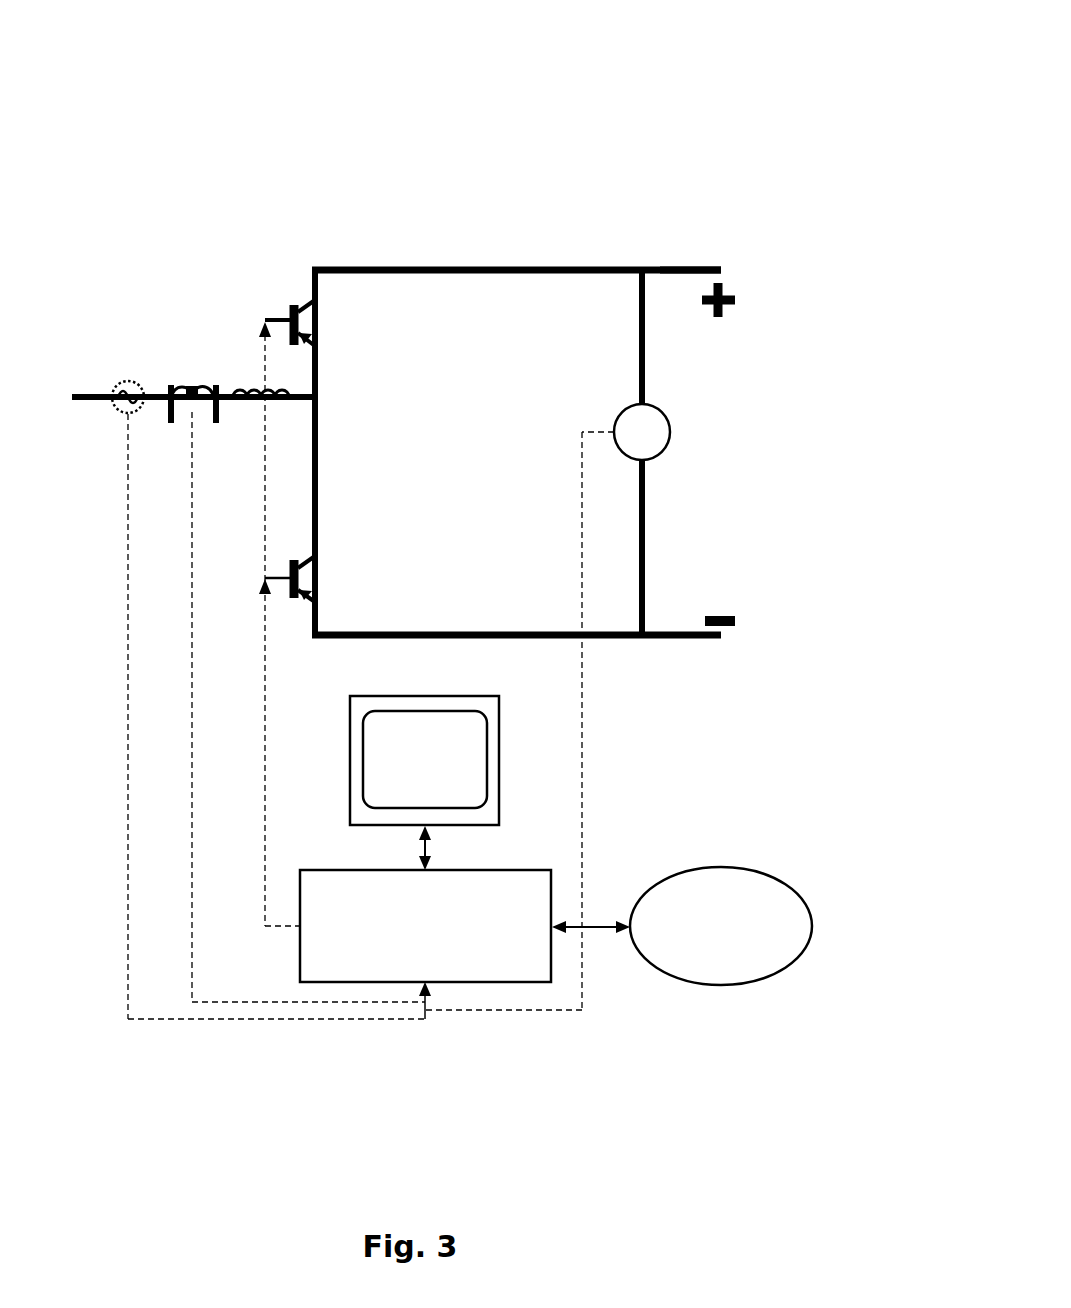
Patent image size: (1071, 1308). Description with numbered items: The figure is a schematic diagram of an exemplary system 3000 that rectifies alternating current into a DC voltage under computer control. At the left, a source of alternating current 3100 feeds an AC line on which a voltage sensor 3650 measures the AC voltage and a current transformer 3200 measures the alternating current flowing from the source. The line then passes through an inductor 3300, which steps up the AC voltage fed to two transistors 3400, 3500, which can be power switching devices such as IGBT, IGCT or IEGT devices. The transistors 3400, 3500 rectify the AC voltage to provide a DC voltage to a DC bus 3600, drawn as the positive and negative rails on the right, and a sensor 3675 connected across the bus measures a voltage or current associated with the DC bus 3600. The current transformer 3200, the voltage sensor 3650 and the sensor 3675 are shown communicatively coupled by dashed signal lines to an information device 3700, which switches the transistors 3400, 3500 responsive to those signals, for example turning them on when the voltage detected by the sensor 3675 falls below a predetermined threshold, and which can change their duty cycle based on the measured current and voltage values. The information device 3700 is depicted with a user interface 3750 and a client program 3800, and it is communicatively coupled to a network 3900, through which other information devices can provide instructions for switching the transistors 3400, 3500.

The system 3000 is at (719, 32).
The source of alternating current 3100 is at (80, 382).
The current transformer 3200 is at (195, 387).
The inductor 3300 is at (247, 375).
The transistor 3400 is at (315, 323).
The transistor 3500 is at (315, 579).
The DC bus 3600 is at (693, 254).
The voltage sensor 3650 is at (127, 382).
The sensor 3675 is at (674, 432).
The information device 3700 is at (425, 926).
The user interface 3750 is at (424, 783).
The client program 3800 is at (425, 926).
The network 3900 is at (682, 926).